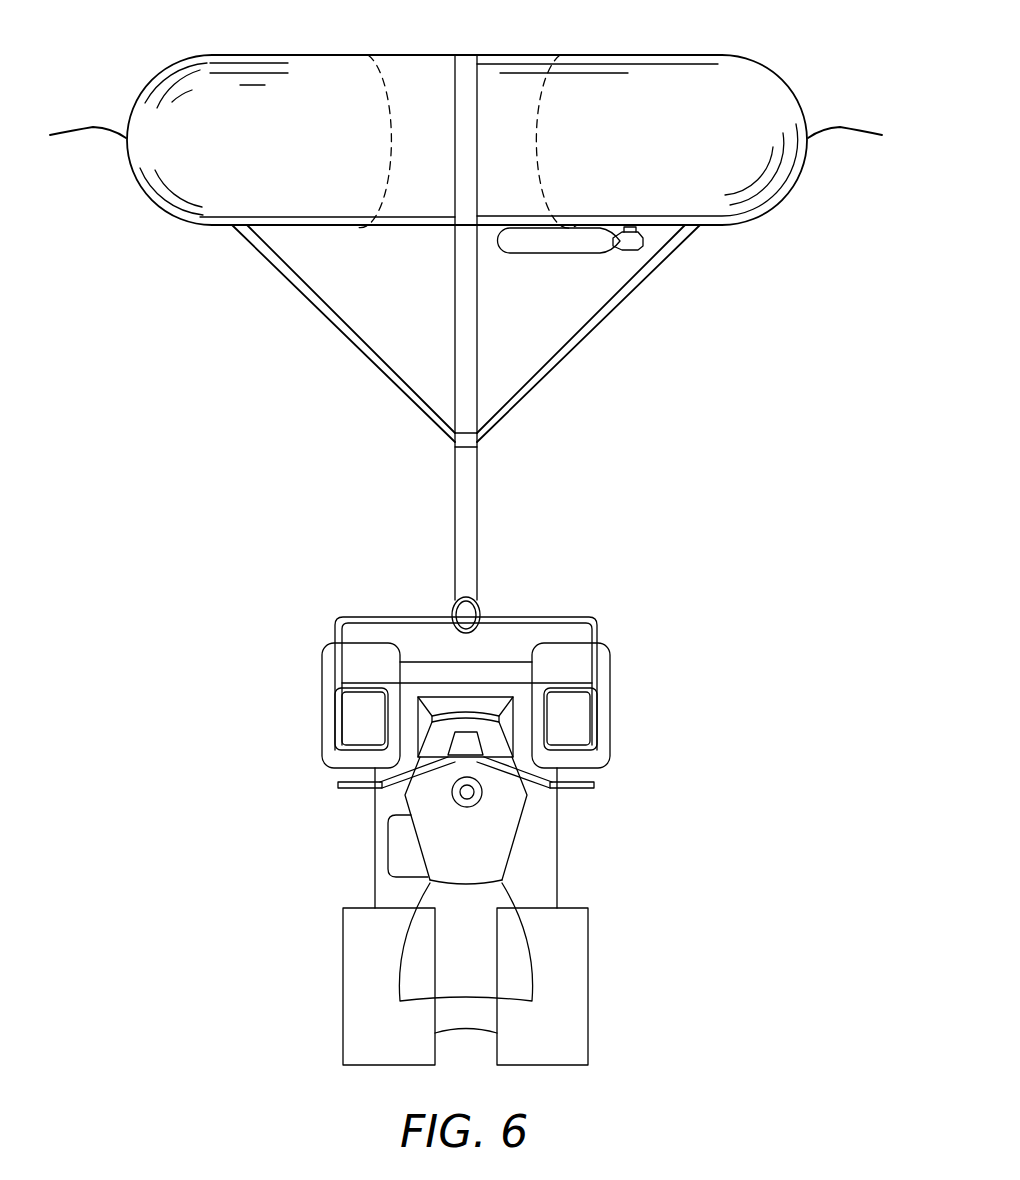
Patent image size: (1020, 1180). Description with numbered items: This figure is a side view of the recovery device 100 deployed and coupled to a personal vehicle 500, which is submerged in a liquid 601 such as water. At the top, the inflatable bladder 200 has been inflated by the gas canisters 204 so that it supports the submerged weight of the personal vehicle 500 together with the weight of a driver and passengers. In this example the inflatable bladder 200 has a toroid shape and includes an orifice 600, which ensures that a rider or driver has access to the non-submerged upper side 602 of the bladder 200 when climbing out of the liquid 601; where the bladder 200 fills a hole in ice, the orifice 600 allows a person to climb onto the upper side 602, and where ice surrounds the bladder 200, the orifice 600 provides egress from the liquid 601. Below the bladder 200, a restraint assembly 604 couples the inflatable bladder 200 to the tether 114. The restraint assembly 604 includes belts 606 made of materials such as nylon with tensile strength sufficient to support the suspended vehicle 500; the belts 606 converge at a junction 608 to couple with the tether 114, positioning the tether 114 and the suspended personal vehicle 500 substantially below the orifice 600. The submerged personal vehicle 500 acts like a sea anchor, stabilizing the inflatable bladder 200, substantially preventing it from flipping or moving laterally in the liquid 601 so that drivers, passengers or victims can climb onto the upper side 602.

The recovery device 100 is at (571, 394).
The tether 114 is at (466, 511).
The inflatable bladder 200 is at (765, 83).
The gas canisters 204 is at (548, 246).
The personal vehicle 500 is at (601, 718).
The orifice 600 is at (412, 63).
The liquid 601 is at (97, 195).
The upper side 602 is at (248, 54).
The restraint assembly 604 is at (356, 394).
The belts 606 is at (456, 272).
The junction 608 is at (456, 440).